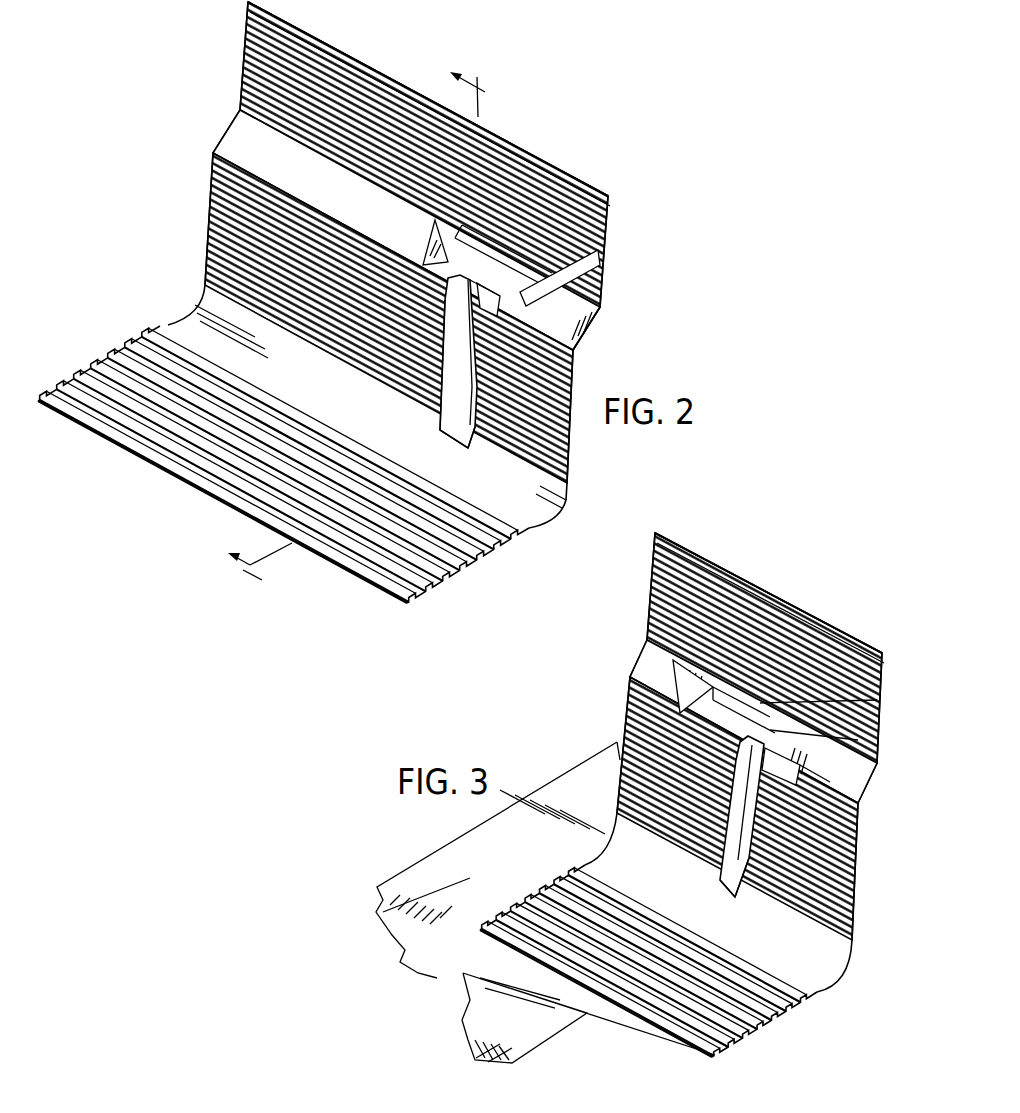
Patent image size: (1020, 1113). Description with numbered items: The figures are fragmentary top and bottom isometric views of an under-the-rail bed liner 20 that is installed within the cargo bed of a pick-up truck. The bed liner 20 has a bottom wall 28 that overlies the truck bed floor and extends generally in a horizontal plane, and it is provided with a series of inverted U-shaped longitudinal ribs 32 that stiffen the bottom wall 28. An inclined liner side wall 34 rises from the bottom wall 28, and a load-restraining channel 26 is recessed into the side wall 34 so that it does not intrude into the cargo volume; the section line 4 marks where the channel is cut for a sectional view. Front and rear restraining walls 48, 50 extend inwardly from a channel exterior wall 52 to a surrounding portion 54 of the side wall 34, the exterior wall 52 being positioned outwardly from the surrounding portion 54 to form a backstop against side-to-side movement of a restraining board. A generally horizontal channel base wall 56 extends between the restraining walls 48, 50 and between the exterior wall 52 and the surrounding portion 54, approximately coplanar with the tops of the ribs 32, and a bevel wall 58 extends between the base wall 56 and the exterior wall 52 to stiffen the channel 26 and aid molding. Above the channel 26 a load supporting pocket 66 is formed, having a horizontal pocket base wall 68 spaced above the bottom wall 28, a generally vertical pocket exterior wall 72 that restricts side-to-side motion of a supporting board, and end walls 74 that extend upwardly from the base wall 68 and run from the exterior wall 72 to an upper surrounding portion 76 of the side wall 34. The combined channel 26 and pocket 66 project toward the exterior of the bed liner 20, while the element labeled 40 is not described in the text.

In FIG. 2, the section line 4- 4 is at (366, 335).
In FIG. 2, the under-the-rail bed liner 20 is at (136, 205).
In FIG. 3, the under-the-rail bed liner 20 is at (510, 712).
In FIG. 2, the load-restraining channel 26 is at (445, 330).
In FIG. 3, the load-restraining channel 26 is at (787, 828).
In FIG. 2, the bottom wall 28 is at (470, 570).
In FIG. 3, the bottom wall 28 is at (747, 1047).
In FIG. 2, the inverted U-shaped longitudinal rib 32 is at (528, 530).
In FIG. 3, the inverted U-shaped longitudinal rib 32 is at (780, 1017).
In FIG. 2, the liner side wall 34 is at (245, 68).
In FIG. 3, the liner side wall 34 is at (653, 552).
In FIG. 2, the top flange 40 is at (332, 46).
In FIG. 3, the top flange 40 is at (693, 553).
In FIG. 2, the front restraining wall 48 is at (453, 382).
In FIG. 2, the rear restraining wall 50 is at (470, 449).
In FIG. 3, the rear restraining wall 50 is at (713, 850).
In FIG. 2, the channel exterior wall 52 is at (508, 290).
In FIG. 3, the channel exterior wall 52 is at (847, 778).
In FIG. 2, the side wall surrounding portion 54 is at (387, 283).
In FIG. 3, the side wall surrounding portion 54 is at (777, 873).
In FIG. 2, the channel base wall 56 is at (440, 440).
In FIG. 3, the channel base wall 56 is at (730, 900).
In FIG. 2, the bevel wall 58 is at (446, 430).
In FIG. 3, the bevel wall 58 is at (730, 882).
In FIG. 2, the load supporting pocket 66 is at (556, 280).
In FIG. 3, the load supporting pocket 66 is at (763, 708).
In FIG. 2, the pocket base wall 68 is at (578, 320).
In FIG. 3, the pocket base wall 68 is at (623, 743).
In FIG. 2, the pocket exterior wall 72 is at (545, 262).
In FIG. 3, the pocket exterior wall 72 is at (845, 712).
In FIG. 2, the end wall 74 is at (432, 247).
In FIG. 3, the end wall 74 is at (677, 712).
In FIG. 2, the upper surrounding portion 76 is at (472, 292).
In FIG. 3, the upper surrounding portion 76 is at (847, 778).